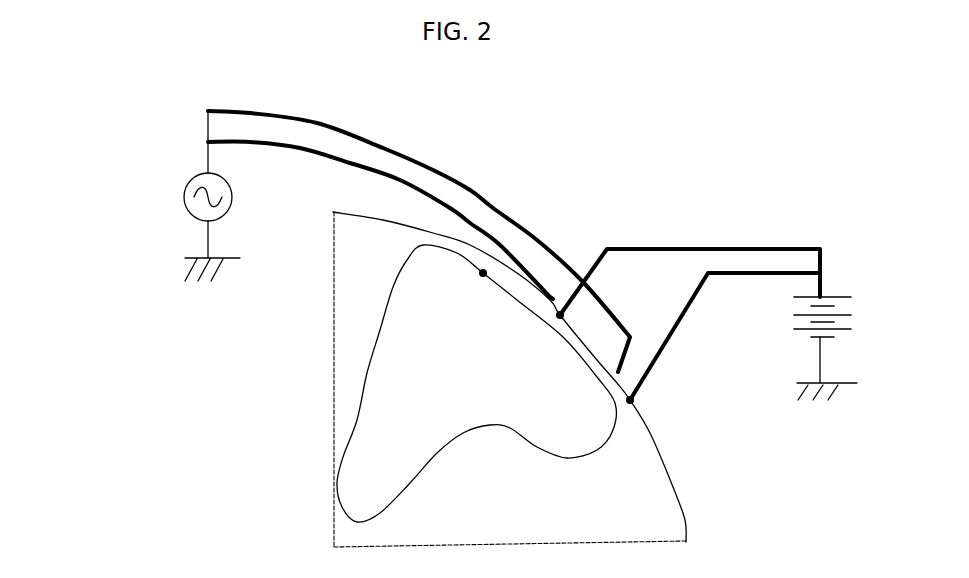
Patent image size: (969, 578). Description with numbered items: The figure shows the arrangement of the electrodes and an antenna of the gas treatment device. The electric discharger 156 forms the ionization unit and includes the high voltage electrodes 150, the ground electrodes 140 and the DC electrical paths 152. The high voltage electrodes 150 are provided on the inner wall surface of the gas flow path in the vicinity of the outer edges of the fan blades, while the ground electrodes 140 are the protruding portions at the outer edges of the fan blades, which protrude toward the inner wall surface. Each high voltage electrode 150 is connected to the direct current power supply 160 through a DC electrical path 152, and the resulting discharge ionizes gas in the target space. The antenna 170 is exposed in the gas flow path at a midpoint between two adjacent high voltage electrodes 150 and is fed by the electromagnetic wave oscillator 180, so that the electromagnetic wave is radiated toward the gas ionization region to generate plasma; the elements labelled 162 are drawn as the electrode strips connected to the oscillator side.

The protruding portion / ground electrode 140 is at (483, 273).
The high voltage electrode 150 is at (630, 400).
The DC electrical path 152 is at (596, 264).
The electric discharger 156 is at (645, 410).
The power supply 160 is at (843, 293).
The electrodes (A...M) 162 is at (482, 230).
The antenna 170 is at (618, 375).
The electromagnetic wave oscillator 180 is at (183, 203).